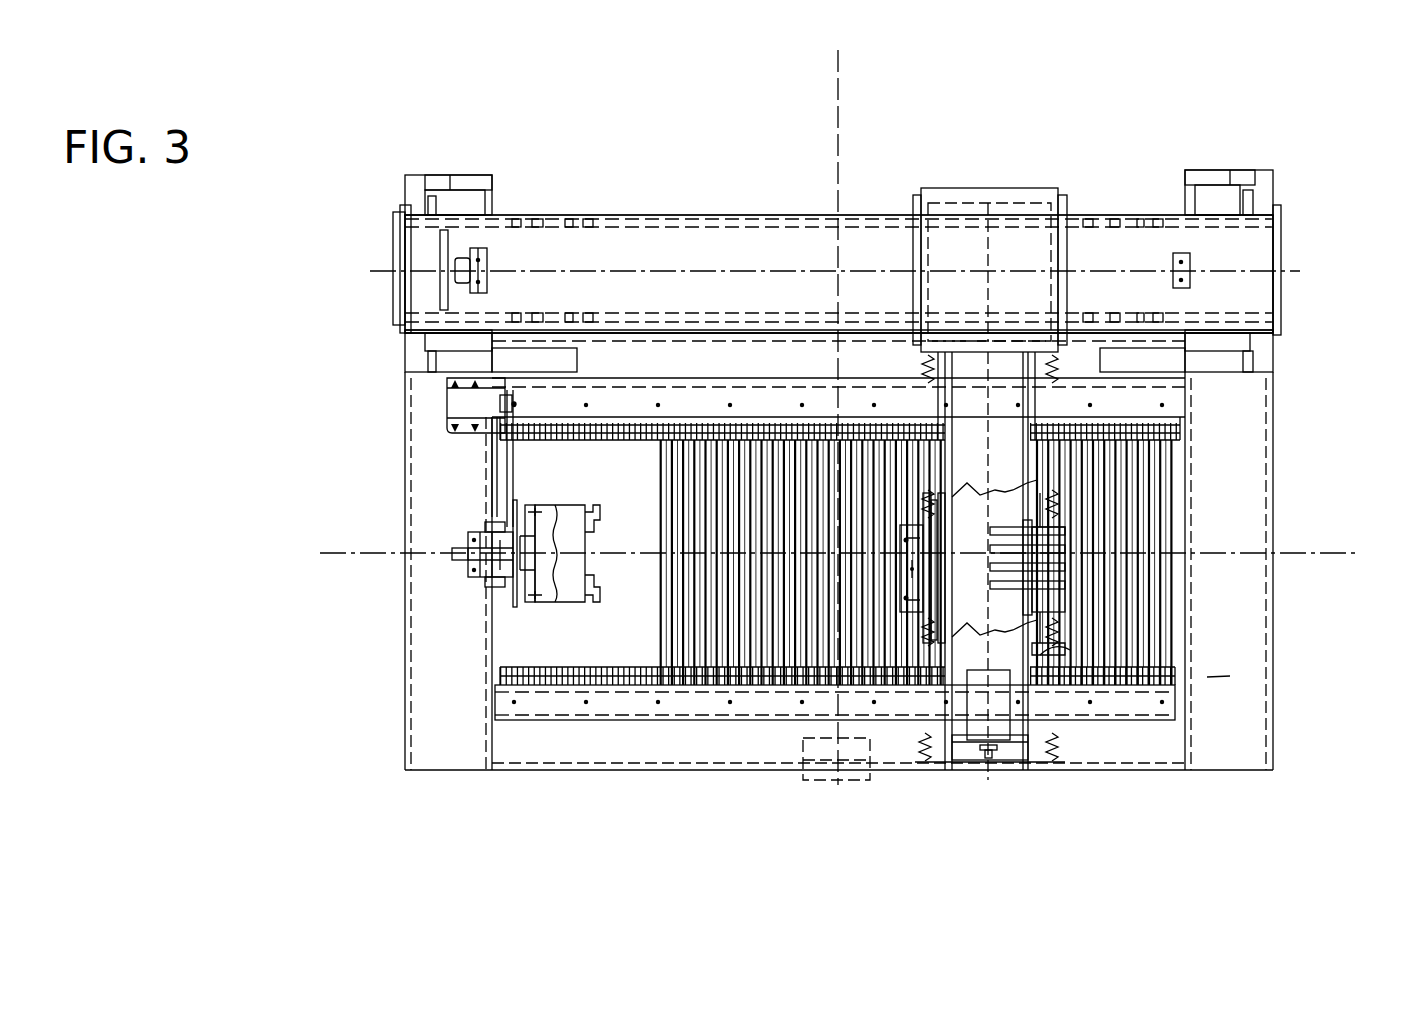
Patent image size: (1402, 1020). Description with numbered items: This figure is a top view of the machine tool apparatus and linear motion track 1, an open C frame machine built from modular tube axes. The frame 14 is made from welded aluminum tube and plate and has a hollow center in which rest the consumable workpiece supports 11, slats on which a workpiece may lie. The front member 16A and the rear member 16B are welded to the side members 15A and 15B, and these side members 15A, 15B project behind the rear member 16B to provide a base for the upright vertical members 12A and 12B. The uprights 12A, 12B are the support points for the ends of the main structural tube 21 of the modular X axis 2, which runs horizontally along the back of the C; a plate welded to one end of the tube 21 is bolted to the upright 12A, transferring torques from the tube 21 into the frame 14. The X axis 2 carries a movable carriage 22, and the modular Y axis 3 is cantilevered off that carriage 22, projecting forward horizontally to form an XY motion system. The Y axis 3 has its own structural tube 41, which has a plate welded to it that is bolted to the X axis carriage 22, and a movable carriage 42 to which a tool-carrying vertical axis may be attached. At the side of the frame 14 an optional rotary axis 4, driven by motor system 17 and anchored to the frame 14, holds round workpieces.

The machine tool apparatus and linear motion track 1 is at (318, 408).
The modular X axis 2 is at (727, 204).
The modular Y axis 3 is at (1015, 457).
The rotary axis 4 is at (573, 598).
The consumable workpiece supports 11 is at (726, 640).
The upright 12A is at (413, 177).
The upright 12B is at (1273, 178).
The frame 14 is at (1230, 676).
The side member 15A is at (1237, 772).
The side member 15B is at (453, 755).
The front member 16A is at (1105, 772).
The rear member 16B is at (780, 358).
The motor system 17 is at (455, 383).
The main structural tube 21 is at (608, 214).
The movable carriage 22 is at (1015, 190).
The structural tube 41 is at (1062, 648).
The movable carriage 42 is at (1062, 553).